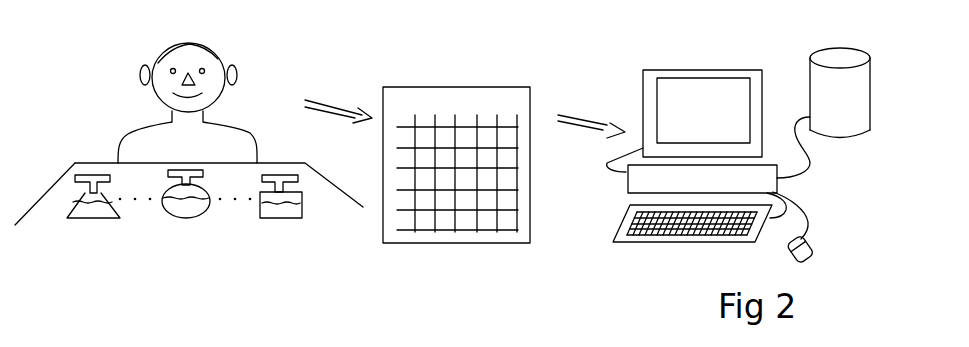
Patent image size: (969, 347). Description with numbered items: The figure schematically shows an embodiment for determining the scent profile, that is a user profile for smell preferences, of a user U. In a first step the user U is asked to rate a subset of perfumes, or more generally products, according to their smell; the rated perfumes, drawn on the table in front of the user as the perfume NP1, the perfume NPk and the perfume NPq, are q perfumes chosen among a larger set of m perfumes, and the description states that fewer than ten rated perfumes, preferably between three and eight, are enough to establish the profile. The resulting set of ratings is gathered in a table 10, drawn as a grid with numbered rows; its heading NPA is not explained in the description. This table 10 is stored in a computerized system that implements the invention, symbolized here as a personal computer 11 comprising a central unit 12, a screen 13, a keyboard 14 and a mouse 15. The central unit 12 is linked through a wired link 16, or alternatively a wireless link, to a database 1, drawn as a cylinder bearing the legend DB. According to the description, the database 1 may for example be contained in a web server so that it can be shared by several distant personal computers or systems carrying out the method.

The user U is at (241, 130).
The rated perfume NP1 is at (90, 213).
The rated perfume NPk is at (183, 209).
The rated perfume NPq is at (285, 213).
The table 10 is at (456, 137).
The product attributes NPA is at (463, 120).
The personal computer 11 is at (738, 44).
The central unit 12 is at (626, 183).
The screen 13 is at (698, 33).
The keyboard 14 is at (612, 241).
The mouse 15 is at (808, 262).
The wired link 16 is at (794, 126).
The database DB is at (840, 93).
The database 1 is at (840, 113).